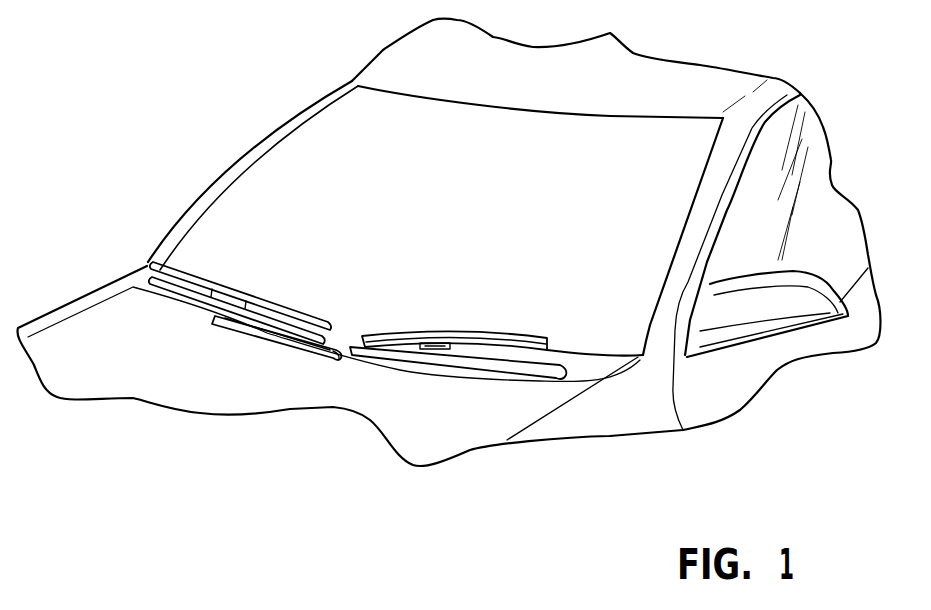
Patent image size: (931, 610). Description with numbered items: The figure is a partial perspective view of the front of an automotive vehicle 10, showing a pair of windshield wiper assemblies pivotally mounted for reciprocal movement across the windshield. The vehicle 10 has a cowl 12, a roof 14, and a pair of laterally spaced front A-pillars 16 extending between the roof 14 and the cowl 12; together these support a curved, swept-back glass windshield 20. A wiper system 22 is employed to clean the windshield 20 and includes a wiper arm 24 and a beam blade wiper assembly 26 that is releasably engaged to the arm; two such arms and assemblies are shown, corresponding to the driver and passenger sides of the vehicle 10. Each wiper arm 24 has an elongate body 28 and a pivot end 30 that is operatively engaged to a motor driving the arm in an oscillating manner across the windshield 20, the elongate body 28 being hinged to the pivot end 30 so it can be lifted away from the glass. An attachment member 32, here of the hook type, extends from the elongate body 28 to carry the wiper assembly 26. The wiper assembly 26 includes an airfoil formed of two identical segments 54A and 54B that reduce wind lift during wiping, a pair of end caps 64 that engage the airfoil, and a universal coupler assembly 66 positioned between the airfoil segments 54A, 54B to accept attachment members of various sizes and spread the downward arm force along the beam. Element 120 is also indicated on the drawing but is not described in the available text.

The vehicle 10 is at (224, 148).
The cowl 12 is at (146, 287).
The roof 14 is at (633, 68).
The A-pillars 16 is at (332, 91).
The glass windshield 20 is at (520, 133).
The wiper system 22 is at (170, 291).
The wiper arm 24 is at (297, 348).
The beam blade windshield wiper assembly 26 is at (201, 304).
The elongate body 28 is at (285, 335).
The pivot end 30 is at (343, 357).
The attachment member 32 is at (218, 313).
The first airfoil segment 54A is at (383, 355).
The second airfoil segment 54B is at (521, 362).
The end caps 64 is at (370, 352).
The universal coupler assembly 66 is at (419, 361).
The heating element 120 is at (439, 364).